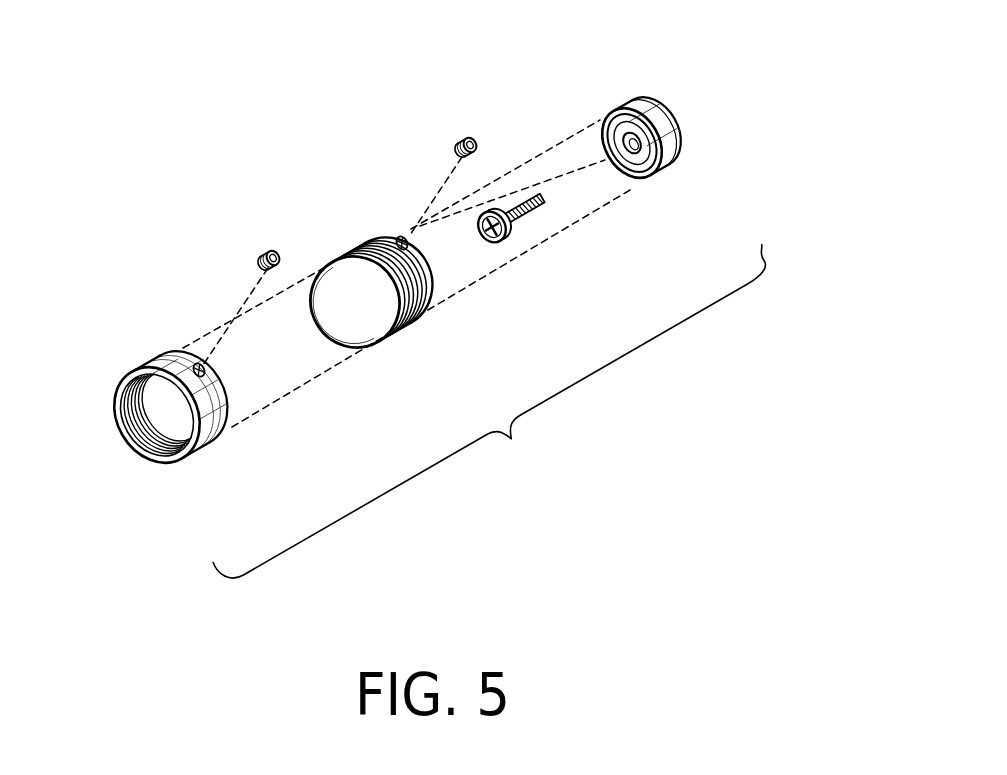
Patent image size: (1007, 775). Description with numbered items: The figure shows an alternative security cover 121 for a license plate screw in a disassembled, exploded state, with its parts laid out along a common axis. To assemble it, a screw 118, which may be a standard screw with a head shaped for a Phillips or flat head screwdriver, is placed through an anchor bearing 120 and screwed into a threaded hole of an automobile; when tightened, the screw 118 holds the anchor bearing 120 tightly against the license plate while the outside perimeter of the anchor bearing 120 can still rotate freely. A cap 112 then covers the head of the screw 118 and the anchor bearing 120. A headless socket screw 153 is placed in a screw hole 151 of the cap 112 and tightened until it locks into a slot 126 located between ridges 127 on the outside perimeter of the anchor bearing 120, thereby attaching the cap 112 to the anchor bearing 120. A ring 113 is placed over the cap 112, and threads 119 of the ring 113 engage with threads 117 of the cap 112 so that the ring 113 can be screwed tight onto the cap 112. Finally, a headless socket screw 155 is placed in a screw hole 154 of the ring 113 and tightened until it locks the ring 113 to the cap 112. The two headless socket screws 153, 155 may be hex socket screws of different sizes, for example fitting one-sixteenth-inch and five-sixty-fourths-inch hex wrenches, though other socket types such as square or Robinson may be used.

The cap 112 is at (372, 333).
The ring 113 is at (213, 443).
The threads of cap 117 is at (375, 240).
The screw 118 is at (528, 217).
The threads of ring 119 is at (127, 447).
The anchor bearing 120 is at (597, 97).
The security cover 121 is at (497, 422).
The slot 126 is at (667, 165).
The ridges 127 is at (622, 108).
The screw hole 151 is at (462, 137).
The headless socket screw 153 is at (401, 236).
The screw hole 154 is at (197, 362).
The headless socket screw 155 is at (266, 251).